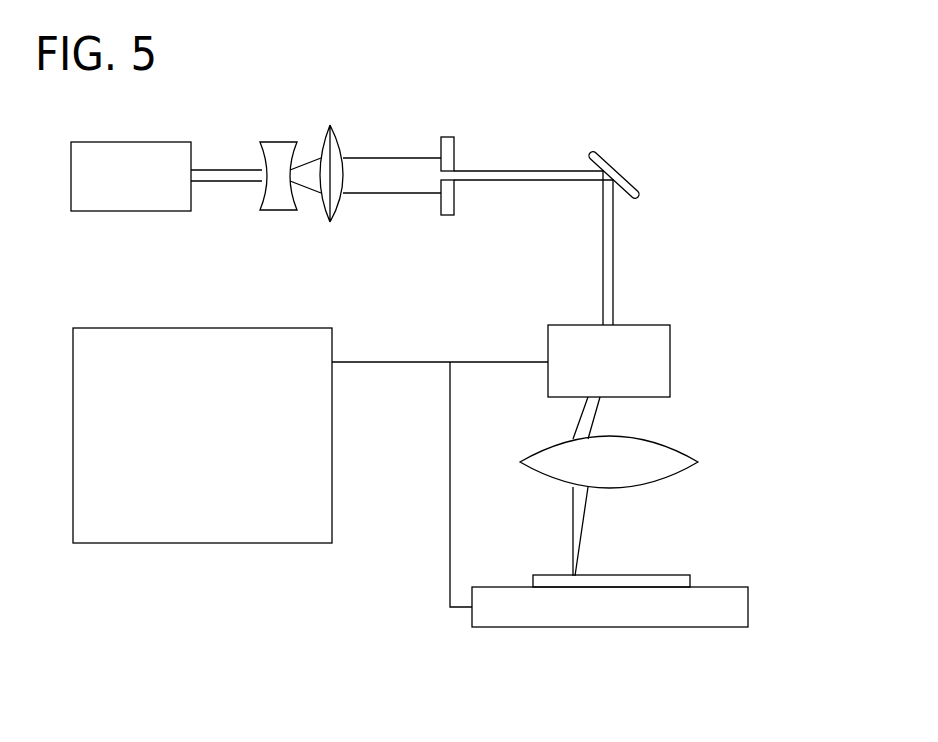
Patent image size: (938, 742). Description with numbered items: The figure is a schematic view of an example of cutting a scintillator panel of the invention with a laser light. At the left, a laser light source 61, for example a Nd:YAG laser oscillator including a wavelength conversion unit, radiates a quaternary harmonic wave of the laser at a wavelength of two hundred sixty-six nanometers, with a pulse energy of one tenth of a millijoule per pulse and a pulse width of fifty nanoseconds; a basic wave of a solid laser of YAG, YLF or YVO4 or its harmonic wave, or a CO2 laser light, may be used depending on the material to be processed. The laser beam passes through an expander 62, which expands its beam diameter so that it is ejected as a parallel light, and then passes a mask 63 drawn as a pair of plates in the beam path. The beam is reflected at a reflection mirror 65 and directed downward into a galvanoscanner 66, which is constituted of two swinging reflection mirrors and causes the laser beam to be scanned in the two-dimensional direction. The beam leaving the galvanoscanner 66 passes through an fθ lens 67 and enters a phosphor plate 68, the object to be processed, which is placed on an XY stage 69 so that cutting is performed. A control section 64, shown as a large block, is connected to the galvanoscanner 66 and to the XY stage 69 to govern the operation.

The laser light source 61 is at (129, 213).
The expander 62 is at (260, 229).
The mask 63 is at (441, 143).
The control section 64 is at (203, 545).
The reflection mirror 65 is at (617, 149).
The galvanoscanner 66 is at (545, 350).
The fθ lens 67 is at (540, 450).
The phosphor plate 68 is at (541, 573).
The XY stage 69 is at (492, 585).